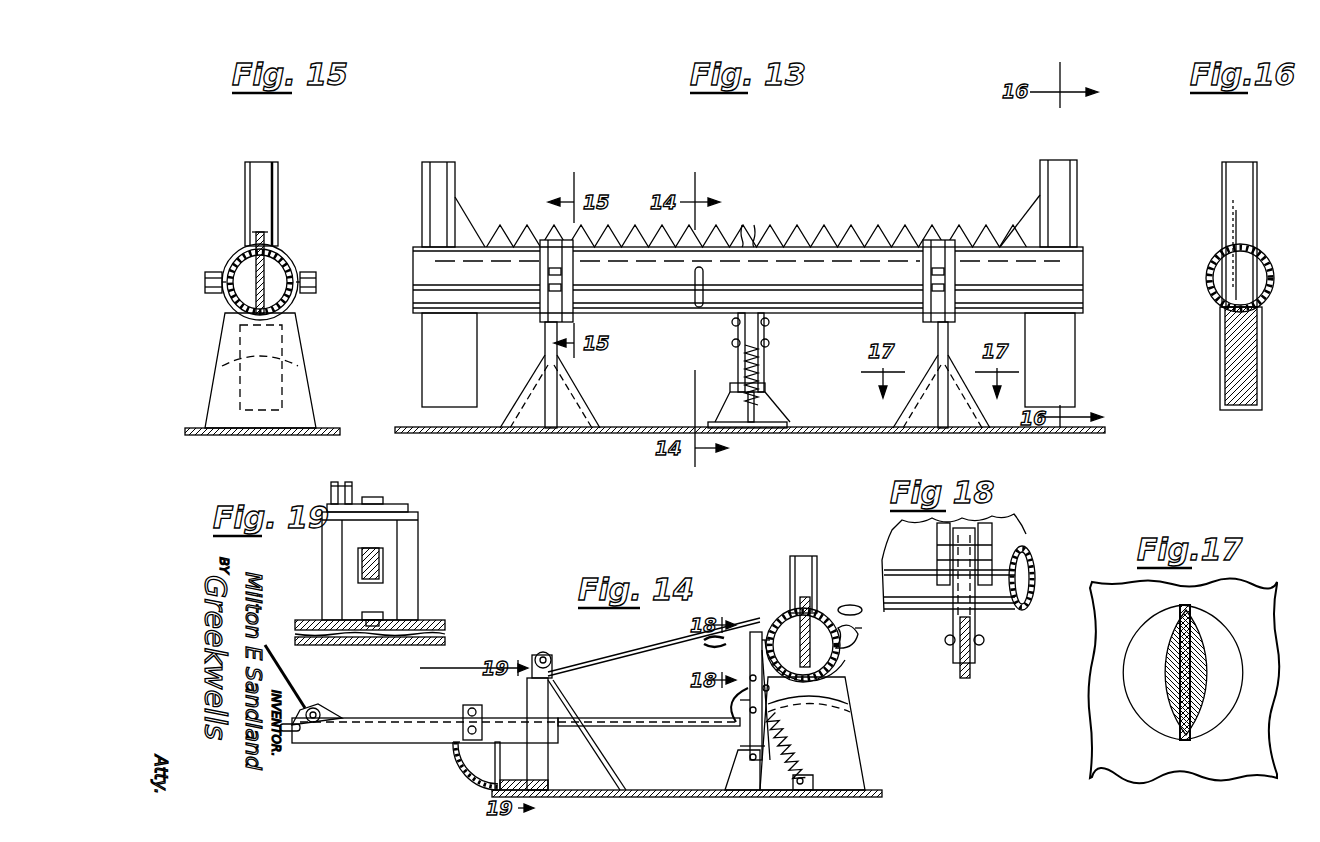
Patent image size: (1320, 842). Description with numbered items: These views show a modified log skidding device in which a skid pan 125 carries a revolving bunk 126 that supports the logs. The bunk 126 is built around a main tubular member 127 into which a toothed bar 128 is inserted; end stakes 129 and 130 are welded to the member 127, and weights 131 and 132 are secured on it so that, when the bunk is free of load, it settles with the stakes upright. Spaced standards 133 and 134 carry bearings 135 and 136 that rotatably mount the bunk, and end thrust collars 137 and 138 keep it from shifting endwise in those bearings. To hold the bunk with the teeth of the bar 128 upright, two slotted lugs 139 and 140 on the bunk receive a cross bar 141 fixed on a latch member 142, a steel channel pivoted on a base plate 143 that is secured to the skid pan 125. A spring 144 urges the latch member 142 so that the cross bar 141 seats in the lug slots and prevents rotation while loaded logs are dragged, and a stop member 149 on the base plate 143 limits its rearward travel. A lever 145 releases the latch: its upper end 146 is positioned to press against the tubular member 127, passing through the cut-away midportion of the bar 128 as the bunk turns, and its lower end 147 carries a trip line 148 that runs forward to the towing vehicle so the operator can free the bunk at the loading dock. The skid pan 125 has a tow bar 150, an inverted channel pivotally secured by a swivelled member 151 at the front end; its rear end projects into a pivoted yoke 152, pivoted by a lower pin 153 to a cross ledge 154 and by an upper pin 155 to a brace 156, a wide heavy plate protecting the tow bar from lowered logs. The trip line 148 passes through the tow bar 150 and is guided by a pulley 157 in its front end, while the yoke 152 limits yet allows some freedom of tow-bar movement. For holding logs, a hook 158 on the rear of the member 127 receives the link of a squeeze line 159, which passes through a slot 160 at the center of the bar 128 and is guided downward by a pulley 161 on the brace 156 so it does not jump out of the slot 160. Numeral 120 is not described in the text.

In FIG. 15, the upright tube 120 is at (278, 170).
In FIG. 15, the skid pan 125 is at (330, 428).
In FIG. 13, the skid pan 125 is at (606, 433).
In FIG. 19, the skid pan 125 is at (445, 641).
In FIG. 14, the skid pan 125 is at (882, 788).
In FIG. 17, the skid pan 125 is at (1092, 702).
In FIG. 13, the revolving bunk 126 is at (854, 232).
In FIG. 15, the main tubular member 127 is at (278, 264).
In FIG. 13, the main tubular member 127 is at (826, 300).
In FIG. 16, the main tubular member 127 is at (1210, 270).
In FIG. 14, the main tubular member 127 is at (782, 620).
In FIG. 18, the main tubular member 127 is at (1032, 540).
In FIG. 15, the toothed bar 128 is at (258, 236).
In FIG. 13, the toothed bar 128 is at (786, 240).
In FIG. 14, the toothed bar 128 is at (812, 602).
In FIG. 13, the end stake 129 is at (422, 178).
In FIG. 13, the end stake 130 is at (1040, 172).
In FIG. 16, the end stake 130 is at (1222, 192).
In FIG. 14, the end stake 130 is at (792, 570).
In FIG. 13, the weight 131 is at (422, 341).
In FIG. 13, the weight 132 is at (1075, 370).
In FIG. 16, the weight 132 is at (1220, 325).
In FIG. 15, the standard 133 is at (306, 337).
In FIG. 13, the standard 133 is at (545, 341).
In FIG. 13, the standard 134 is at (948, 330).
In FIG. 14, the standard 134 is at (852, 712).
In FIG. 15, the bearing 135 is at (314, 267).
In FIG. 13, the bearing 135 is at (546, 240).
In FIG. 13, the bearing 136 is at (945, 240).
In FIG. 14, the bearing 136 is at (845, 680).
In FIG. 15, the end thrust collar 137 is at (300, 301).
In FIG. 13, the end thrust collar 137 is at (573, 274).
In FIG. 13, the end thrust collar 138 is at (923, 276).
In FIG. 18, the lug 139 is at (937, 540).
In FIG. 14, the lug 140 is at (767, 634).
In FIG. 18, the lug 140 is at (985, 530).
In FIG. 14, the cross bar 141 is at (750, 644).
In FIG. 18, the cross bar 141 is at (937, 552).
In FIG. 13, the latch member 142 is at (738, 350).
In FIG. 14, the latch member 142 is at (750, 660).
In FIG. 18, the latch member 142 is at (975, 618).
In FIG. 13, the base plate 143 is at (772, 410).
In FIG. 14, the base plate 143 is at (740, 752).
In FIG. 13, the spring 144 is at (745, 370).
In FIG. 14, the spring 144 is at (792, 728).
In FIG. 13, the lever 145 is at (736, 333).
In FIG. 14, the lever 145 is at (740, 700).
In FIG. 18, the lever 145 is at (972, 668).
In FIG. 14, the upper end of lever 146 is at (784, 693).
In FIG. 14, the lower end of lever 147 is at (736, 716).
In FIG. 14, the trip line 148 is at (603, 716).
In FIG. 13, the stop member 149 is at (765, 388).
In FIG. 14, the stop member 149 is at (746, 746).
In FIG. 19, the tow bar 150 is at (365, 556).
In FIG. 14, the tow bar 150 is at (362, 740).
In FIG. 14, the swivelled member 151 is at (463, 712).
In FIG. 19, the pivoted yoke 152 is at (418, 560).
In FIG. 14, the pivoted yoke 152 is at (527, 695).
In FIG. 19, the lower pin 153 is at (370, 612).
In FIG. 19, the cross ledge 154 is at (438, 616).
In FIG. 14, the cross ledge 154 is at (550, 786).
In FIG. 17, the cross ledge 154 is at (1168, 628).
In FIG. 19, the pin 155 is at (383, 499).
In FIG. 19, the brace 156 is at (408, 506).
In FIG. 14, the brace 156 is at (588, 742).
In FIG. 14, the pulley 157 is at (318, 708).
In FIG. 14, the hook 158 is at (858, 665).
In FIG. 13, the squeeze line 159 is at (695, 277).
In FIG. 14, the squeeze line 159 is at (604, 658).
In FIG. 13, the slot 160 is at (748, 236).
In FIG. 19, the pulley 161 is at (350, 484).
In FIG. 14, the pulley 161 is at (551, 656).